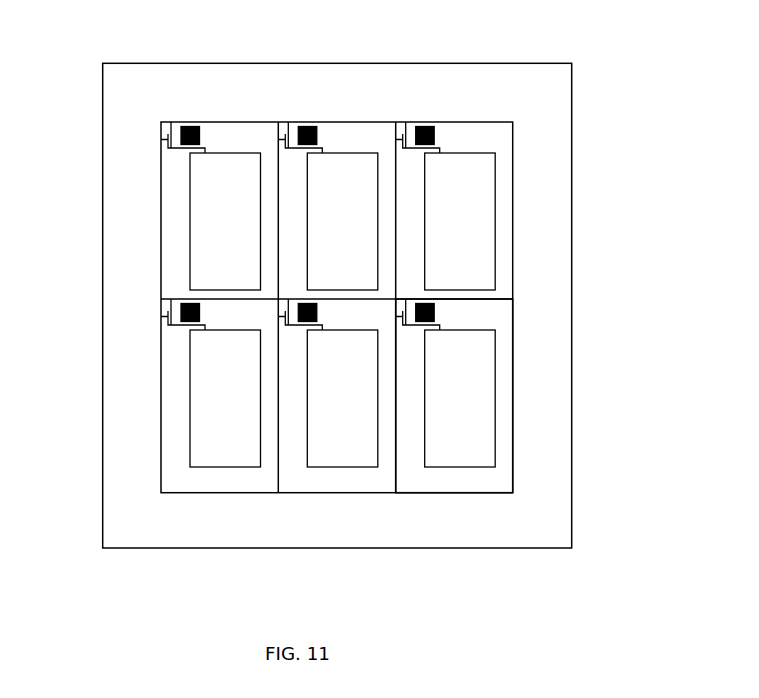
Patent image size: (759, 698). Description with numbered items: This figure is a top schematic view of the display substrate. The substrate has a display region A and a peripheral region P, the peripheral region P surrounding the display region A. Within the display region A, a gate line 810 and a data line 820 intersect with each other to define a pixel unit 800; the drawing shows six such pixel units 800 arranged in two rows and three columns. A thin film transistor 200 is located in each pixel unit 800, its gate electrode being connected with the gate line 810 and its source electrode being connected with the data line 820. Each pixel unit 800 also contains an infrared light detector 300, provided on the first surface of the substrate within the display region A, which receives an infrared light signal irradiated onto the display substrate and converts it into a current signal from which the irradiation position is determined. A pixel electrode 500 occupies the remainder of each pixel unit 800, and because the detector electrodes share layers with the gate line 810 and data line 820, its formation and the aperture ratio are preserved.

The thin film transistor 200 is at (171, 124).
The infrared light detector 300 is at (190, 126).
The pixel electrode 500 is at (480, 202).
The pixel unit 800 is at (477, 482).
The gate line 810 is at (162, 357).
The data line 820 is at (177, 298).
The display region A is at (513, 397).
The peripheral region P is at (565, 475).